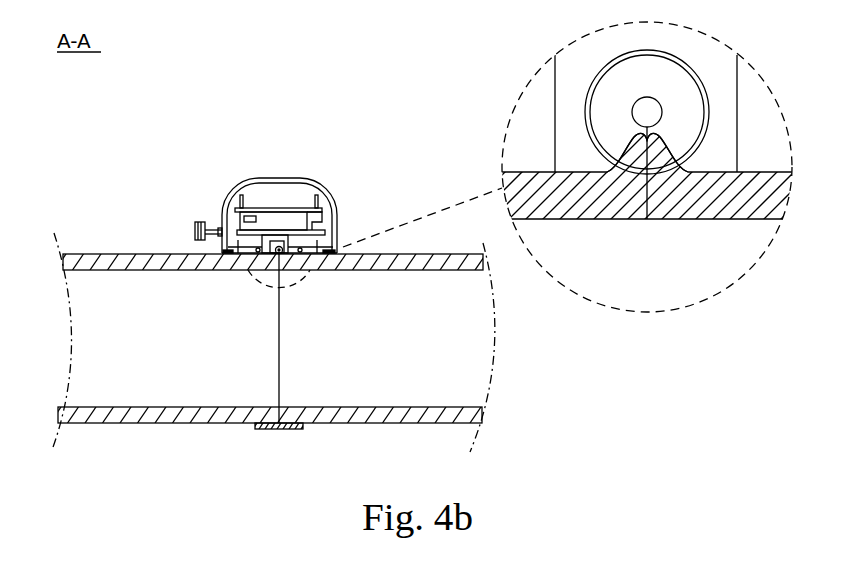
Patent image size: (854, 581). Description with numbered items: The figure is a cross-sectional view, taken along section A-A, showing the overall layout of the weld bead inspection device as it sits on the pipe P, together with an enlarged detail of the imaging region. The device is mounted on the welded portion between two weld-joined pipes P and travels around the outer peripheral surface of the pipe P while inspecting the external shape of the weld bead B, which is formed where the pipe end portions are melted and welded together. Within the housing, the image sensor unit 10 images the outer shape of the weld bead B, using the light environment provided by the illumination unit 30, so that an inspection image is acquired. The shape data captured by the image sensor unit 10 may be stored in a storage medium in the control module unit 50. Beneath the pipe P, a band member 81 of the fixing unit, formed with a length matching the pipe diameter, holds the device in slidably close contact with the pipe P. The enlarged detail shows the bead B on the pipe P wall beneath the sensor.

The image sensor unit 10 is at (258, 231).
The illumination unit 30 is at (278, 237).
The control module unit 50 is at (258, 210).
The band member 81 is at (292, 427).
The pipe P is at (168, 265).
The weld bead B is at (672, 165).